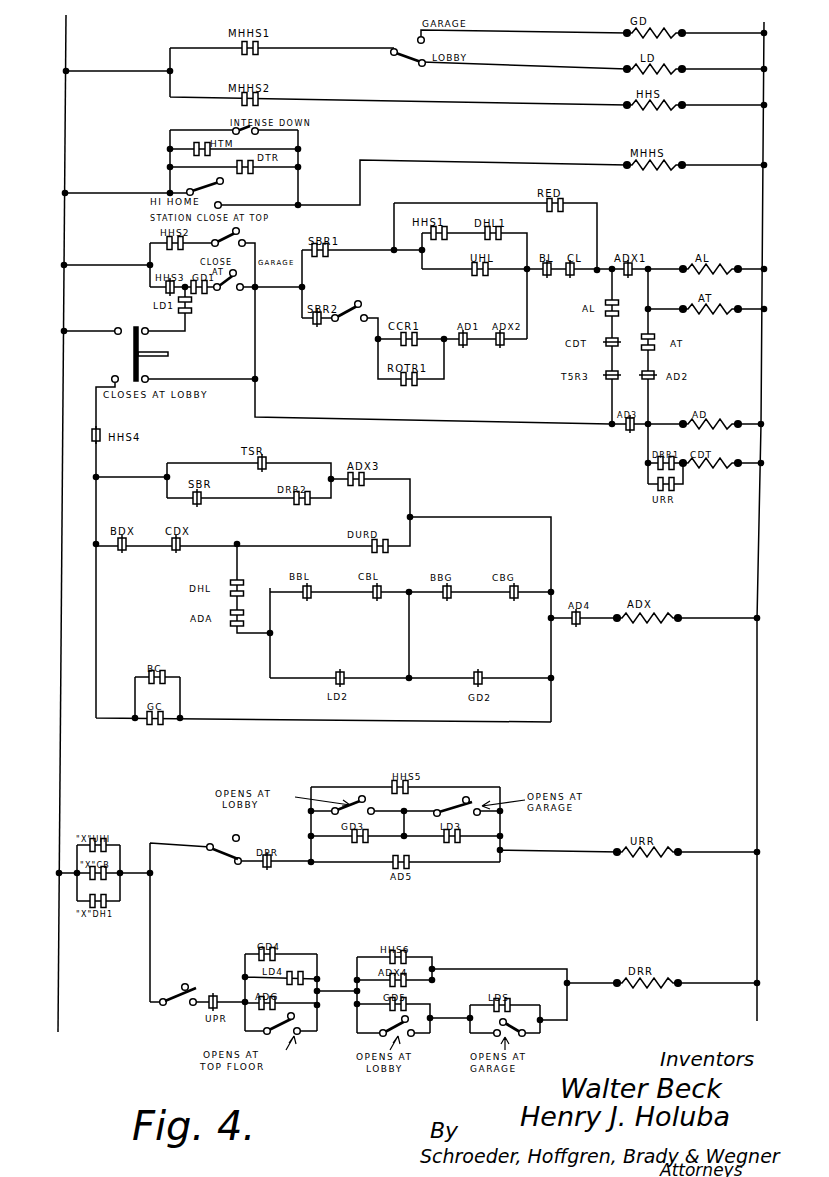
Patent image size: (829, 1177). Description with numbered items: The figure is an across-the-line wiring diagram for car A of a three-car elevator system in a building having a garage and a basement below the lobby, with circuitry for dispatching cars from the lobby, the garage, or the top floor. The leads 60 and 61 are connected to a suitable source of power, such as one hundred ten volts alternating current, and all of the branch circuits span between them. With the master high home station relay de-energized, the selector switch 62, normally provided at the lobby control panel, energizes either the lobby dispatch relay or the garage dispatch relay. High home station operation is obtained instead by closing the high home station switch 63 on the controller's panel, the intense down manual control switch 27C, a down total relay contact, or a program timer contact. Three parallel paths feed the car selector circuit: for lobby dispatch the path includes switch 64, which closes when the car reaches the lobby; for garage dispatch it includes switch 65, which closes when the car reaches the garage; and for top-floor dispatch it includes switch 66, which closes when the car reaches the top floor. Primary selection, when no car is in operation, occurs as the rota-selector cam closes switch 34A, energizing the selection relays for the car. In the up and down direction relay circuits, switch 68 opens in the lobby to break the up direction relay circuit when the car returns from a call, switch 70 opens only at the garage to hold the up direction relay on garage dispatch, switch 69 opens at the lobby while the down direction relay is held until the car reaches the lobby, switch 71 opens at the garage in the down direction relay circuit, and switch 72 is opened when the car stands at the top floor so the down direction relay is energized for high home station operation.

The lead 60 is at (67, 32).
The lead 61 is at (764, 24).
The switch 62 is at (406, 58).
The high home station switch 63 is at (225, 187).
The switch 64 is at (140, 344).
The switch 65 is at (228, 292).
The switch 66 is at (243, 236).
The intense down manual control switch 27C is at (235, 128).
The switch 34A is at (350, 323).
The switch 68 is at (366, 806).
The switch 70 is at (447, 808).
The switch 72 is at (266, 1027).
The switch 69 is at (372, 1030).
The switch 71 is at (512, 1027).